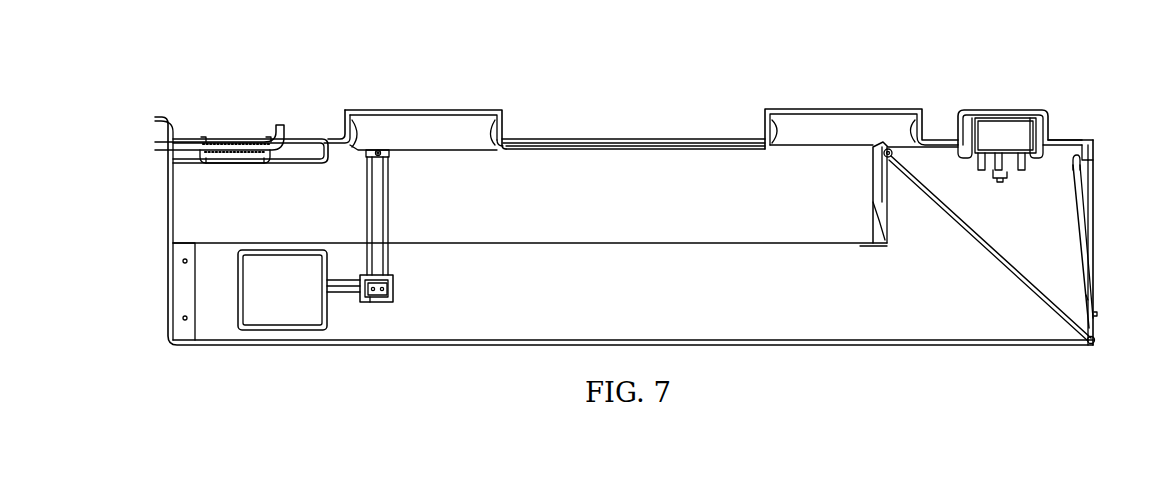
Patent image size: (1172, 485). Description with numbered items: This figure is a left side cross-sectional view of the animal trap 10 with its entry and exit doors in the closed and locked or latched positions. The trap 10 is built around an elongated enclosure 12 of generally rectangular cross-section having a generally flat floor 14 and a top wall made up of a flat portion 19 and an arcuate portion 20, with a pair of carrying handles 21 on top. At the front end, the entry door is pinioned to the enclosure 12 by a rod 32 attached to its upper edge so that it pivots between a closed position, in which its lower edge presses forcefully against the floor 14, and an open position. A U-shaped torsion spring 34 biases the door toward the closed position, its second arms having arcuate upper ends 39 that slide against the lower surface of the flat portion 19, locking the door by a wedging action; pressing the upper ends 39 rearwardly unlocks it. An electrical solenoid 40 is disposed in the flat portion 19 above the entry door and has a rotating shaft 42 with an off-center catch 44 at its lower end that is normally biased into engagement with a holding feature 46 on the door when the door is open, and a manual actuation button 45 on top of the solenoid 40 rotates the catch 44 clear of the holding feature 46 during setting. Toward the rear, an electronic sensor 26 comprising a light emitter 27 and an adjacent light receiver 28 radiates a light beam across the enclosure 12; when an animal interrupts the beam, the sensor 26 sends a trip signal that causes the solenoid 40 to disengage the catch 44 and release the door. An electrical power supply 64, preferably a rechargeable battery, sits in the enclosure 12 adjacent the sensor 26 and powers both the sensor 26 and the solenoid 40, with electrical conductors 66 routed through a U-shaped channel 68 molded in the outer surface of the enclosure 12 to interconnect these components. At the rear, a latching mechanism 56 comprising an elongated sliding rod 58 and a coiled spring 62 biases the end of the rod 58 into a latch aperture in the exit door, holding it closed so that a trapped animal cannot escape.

The animal trap 10 is at (718, 69).
The enclosure 12 is at (450, 348).
The floor 14 is at (730, 341).
The flat portion of the top wall 19 is at (1067, 138).
The arcuate portion of the top wall 20 is at (688, 165).
The carrying handles 21 is at (416, 126).
The electronic sensor 26 is at (393, 278).
The light emitter 27 is at (373, 302).
The light receiver 28 is at (388, 290).
The rod 32 is at (937, 205).
The spring 34 is at (1083, 259).
The arcuate upper end 39 is at (1083, 166).
The electrical solenoid 40 is at (1013, 124).
The shaft 42 is at (1005, 173).
The catch 44 is at (997, 177).
The solenoid manual actuation button 45 is at (990, 112).
The holding feature 46 is at (993, 247).
The latching mechanism 56 is at (266, 113).
The elongated rod 58 is at (205, 142).
The coiled spring 62 is at (249, 165).
The electrical power supply 64 is at (291, 250).
The electrical conductors 66 is at (596, 147).
The U-shaped channel 68 is at (390, 200).